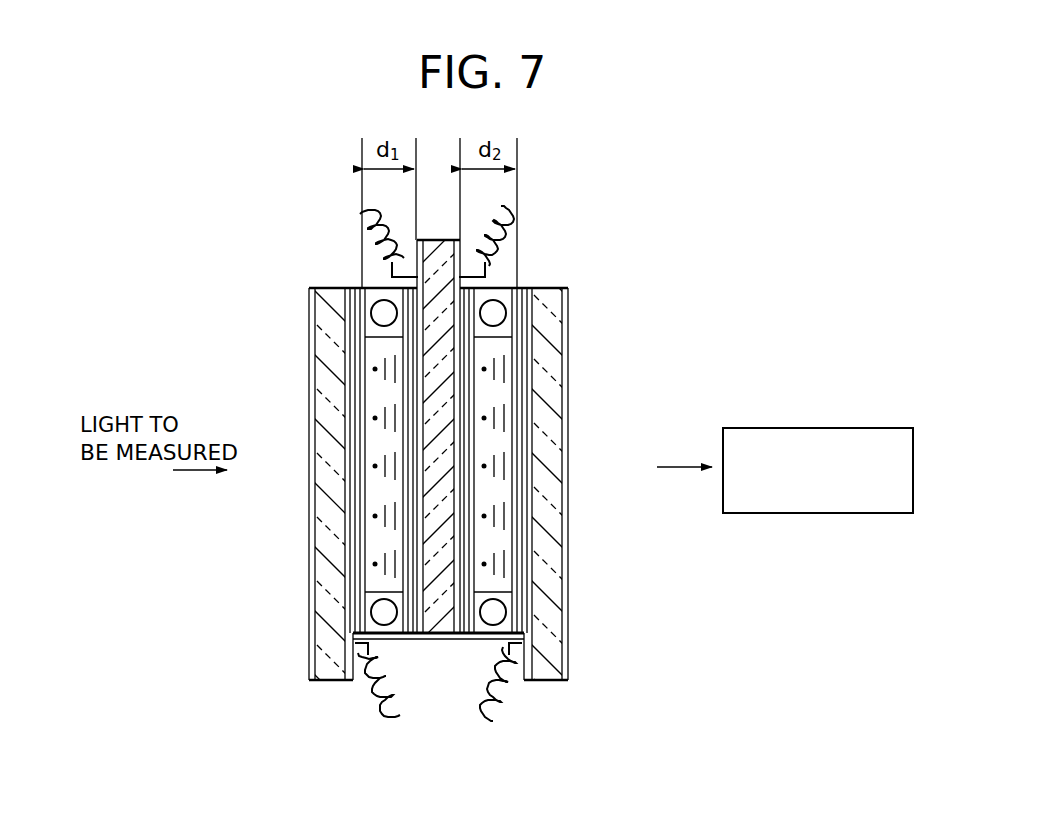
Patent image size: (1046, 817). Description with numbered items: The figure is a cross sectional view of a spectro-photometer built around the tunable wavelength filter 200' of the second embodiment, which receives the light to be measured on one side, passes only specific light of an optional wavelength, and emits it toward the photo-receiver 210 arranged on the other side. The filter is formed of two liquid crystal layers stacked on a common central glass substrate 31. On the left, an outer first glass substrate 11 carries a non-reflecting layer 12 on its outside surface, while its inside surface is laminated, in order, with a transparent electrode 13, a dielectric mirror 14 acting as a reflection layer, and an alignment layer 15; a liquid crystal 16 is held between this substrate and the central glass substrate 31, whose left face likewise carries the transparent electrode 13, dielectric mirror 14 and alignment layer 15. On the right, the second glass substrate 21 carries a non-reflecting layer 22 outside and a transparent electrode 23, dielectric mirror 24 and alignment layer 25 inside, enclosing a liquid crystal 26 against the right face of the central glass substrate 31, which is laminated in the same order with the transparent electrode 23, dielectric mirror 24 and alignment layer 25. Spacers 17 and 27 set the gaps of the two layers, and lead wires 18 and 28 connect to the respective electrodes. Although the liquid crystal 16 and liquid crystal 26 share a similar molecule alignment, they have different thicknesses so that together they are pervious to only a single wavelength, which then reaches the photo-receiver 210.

The first glass substrate 11 is at (318, 555).
The non-reflecting layer 12 is at (312, 618).
The transparent electrode 13 is at (312, 489).
The dielectric mirror 14 is at (356, 432).
The alignment layer 15 is at (361, 289).
The liquid crystal 16 is at (318, 357).
The spacer 17 is at (383, 305).
The lead wire 18 is at (364, 212).
The second glass substrate 21 is at (554, 575).
The non-reflecting layer 22 is at (568, 640).
The transparent electrode 23 is at (531, 515).
The dielectric mirror 24 is at (523, 289).
The alignment layer 25 is at (518, 288).
The liquid crystal 26 is at (497, 493).
The spacer 27 is at (497, 313).
The lead wire 28 is at (497, 208).
The central glass substrate 31 is at (438, 240).
The tunable wavelength filter 200' is at (629, 143).
The photo-receiver 210 is at (856, 430).